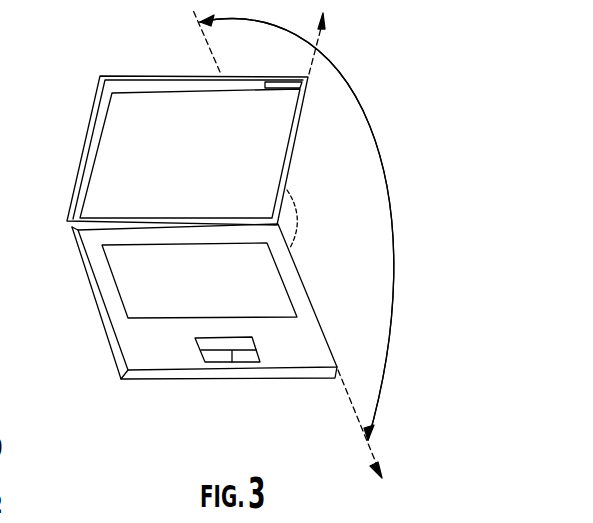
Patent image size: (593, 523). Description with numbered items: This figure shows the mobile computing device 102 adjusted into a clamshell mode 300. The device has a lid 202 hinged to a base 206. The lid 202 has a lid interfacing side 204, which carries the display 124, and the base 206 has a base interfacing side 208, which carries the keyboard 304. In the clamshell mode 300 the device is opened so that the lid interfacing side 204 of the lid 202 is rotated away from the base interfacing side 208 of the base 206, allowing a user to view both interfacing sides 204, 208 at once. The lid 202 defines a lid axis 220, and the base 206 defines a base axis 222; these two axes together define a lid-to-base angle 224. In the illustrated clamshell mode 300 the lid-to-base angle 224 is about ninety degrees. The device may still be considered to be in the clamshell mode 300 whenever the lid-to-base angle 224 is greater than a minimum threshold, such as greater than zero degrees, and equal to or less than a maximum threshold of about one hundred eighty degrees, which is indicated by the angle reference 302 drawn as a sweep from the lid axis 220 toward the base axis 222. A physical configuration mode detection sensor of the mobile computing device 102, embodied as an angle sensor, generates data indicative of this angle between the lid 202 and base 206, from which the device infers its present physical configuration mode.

The mobile computing device 102 is at (62, 303).
The display 124 is at (314, 144).
The lid 202 is at (100, 88).
The lid interfacing side 204 is at (95, 152).
The base 206 is at (230, 428).
The base interfacing side 208 is at (110, 418).
The lid axis 220 is at (345, 31).
The base axis 222 is at (400, 437).
The lid-to-base angle 224 is at (314, 196).
The clamshell mode 300 is at (405, 69).
The angle reference 302 is at (410, 207).
The keyboard 304 is at (330, 277).